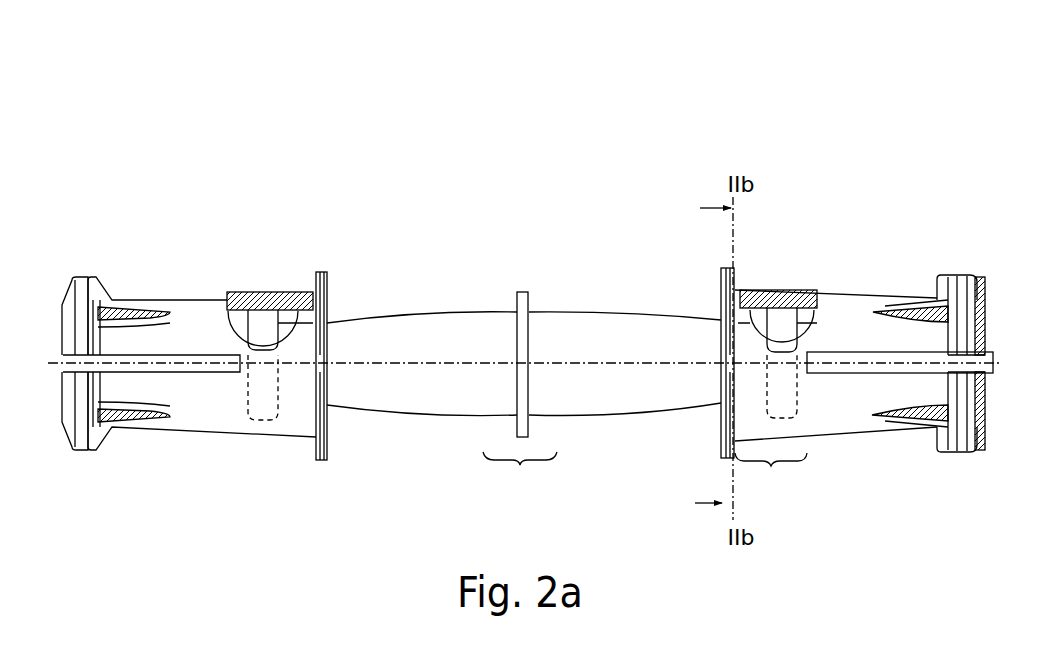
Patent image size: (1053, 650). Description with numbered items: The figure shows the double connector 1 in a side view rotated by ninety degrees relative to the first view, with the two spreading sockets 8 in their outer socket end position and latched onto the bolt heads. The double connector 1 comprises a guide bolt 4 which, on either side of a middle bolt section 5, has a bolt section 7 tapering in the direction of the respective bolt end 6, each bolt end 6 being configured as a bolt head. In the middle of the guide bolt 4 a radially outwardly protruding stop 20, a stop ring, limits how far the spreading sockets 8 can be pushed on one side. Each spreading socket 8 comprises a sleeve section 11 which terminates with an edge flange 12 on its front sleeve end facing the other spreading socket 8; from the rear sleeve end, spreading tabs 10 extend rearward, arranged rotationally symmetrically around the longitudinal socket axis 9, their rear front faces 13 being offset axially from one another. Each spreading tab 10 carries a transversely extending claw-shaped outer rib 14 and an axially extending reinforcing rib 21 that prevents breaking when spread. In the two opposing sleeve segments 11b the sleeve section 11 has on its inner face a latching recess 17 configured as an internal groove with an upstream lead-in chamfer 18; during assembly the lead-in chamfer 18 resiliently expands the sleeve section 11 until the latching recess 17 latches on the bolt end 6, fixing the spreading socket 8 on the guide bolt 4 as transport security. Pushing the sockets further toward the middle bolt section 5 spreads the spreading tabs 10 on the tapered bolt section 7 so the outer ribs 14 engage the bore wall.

The double connector 1 is at (310, 175).
The guide bolt 4 is at (473, 305).
The middle bolt section 5 is at (520, 472).
The bolt end 6 is at (262, 332).
The bolt section 7 is at (433, 390).
The spreading socket 8 is at (226, 447).
The longitudinal socket axis 9 is at (993, 362).
The spreading tab 10 is at (897, 297).
The sleeve section 11 is at (527, 425).
The sleeve segment 11b is at (773, 290).
The edge flange 12 is at (727, 287).
The rear front face 13 is at (990, 330).
The outer rib 14 is at (948, 275).
The latching recess 17 is at (792, 290).
The lead-in chamfer 18 is at (727, 292).
The stop 20 is at (522, 292).
The reinforcing rib 21 is at (927, 300).